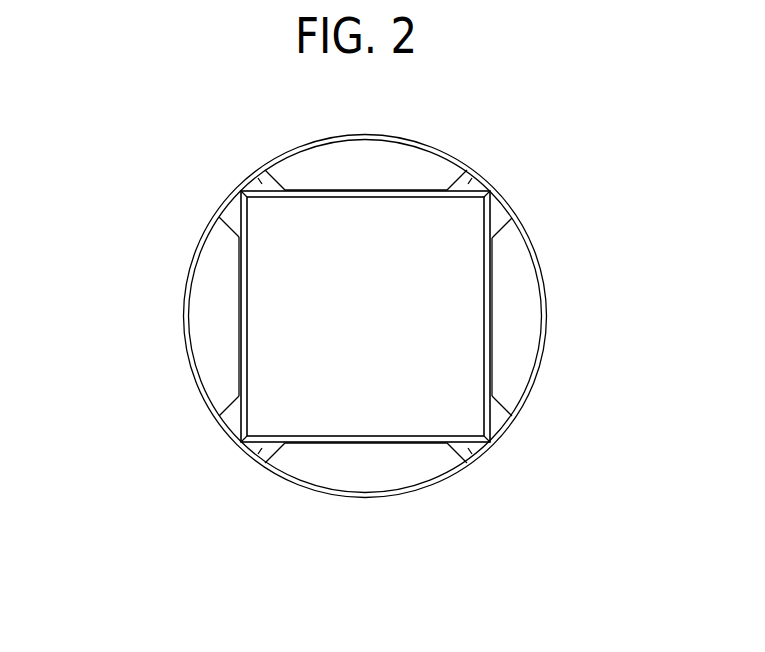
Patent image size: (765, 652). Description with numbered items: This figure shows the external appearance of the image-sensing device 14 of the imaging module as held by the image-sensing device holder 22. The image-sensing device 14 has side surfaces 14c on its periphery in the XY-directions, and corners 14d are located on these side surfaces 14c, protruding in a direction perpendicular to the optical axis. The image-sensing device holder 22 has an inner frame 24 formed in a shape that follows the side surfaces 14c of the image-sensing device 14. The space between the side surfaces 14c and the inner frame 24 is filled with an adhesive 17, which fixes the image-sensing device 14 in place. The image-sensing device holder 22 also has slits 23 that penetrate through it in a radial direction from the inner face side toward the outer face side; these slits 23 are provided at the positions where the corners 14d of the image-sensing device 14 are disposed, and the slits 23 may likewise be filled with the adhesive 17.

The image-sensing device 14 is at (275, 322).
The side surfaces 14c is at (492, 300).
The corners 14d is at (241, 190).
The adhesive 17 is at (258, 182).
The image-sensing device holder 22 is at (404, 166).
The slits 23 is at (233, 213).
The inner frame 24 is at (492, 267).